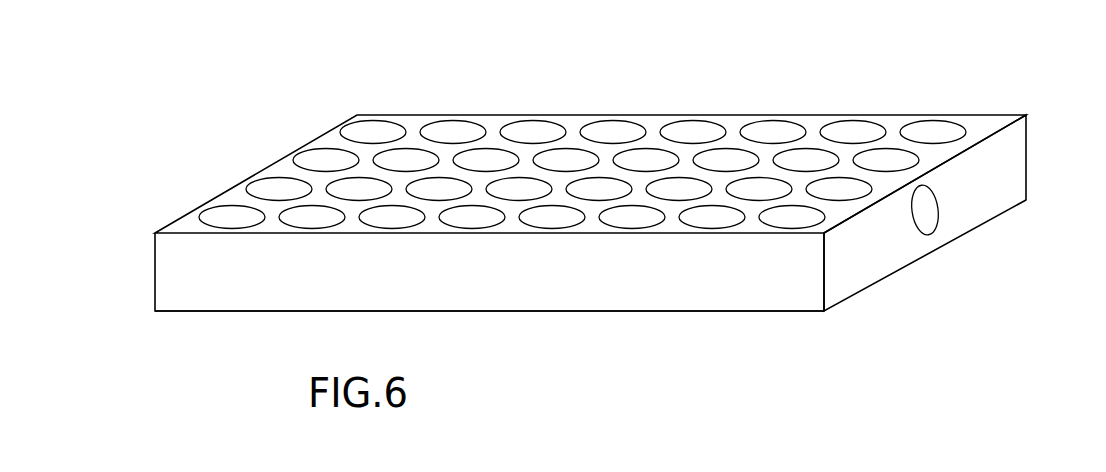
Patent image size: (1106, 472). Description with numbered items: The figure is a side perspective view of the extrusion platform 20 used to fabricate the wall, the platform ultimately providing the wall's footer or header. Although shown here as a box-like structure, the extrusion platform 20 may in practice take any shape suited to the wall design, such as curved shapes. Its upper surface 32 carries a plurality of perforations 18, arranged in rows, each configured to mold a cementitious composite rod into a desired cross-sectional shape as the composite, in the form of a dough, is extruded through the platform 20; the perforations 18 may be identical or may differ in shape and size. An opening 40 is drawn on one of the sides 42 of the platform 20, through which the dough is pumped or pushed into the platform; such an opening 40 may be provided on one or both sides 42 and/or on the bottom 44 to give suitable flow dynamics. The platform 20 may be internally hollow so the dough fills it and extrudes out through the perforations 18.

The perforations 18 is at (485, 160).
The extrusion platform 20 is at (890, 75).
The surface 32 is at (897, 122).
The opening 40 is at (928, 210).
The sides 42 is at (155, 272).
The bottom 44 is at (488, 311).